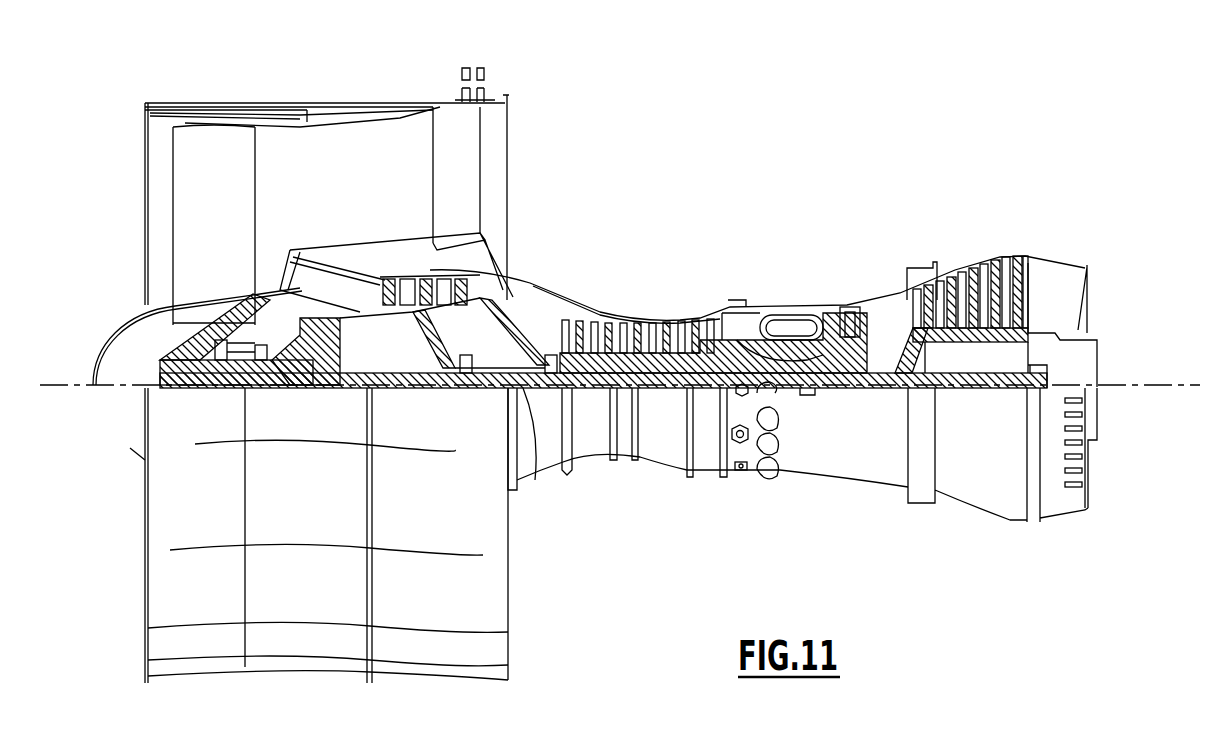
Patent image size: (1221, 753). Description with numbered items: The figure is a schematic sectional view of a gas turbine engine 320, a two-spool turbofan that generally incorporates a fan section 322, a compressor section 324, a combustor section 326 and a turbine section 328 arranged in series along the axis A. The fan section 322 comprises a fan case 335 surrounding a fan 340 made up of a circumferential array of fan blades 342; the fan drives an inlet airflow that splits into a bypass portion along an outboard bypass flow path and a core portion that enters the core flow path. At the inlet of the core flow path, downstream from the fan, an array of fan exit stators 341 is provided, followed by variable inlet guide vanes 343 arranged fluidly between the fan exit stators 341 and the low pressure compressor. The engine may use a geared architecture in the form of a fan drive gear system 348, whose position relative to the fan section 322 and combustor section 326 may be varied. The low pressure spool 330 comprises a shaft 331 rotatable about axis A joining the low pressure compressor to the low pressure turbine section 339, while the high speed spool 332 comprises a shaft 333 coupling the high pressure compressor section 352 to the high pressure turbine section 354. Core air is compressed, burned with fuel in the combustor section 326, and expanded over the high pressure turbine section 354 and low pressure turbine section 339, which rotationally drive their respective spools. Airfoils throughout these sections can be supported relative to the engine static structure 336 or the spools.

The gas turbine engine 320 is at (783, 153).
The fan section 322 is at (242, 90).
The fan case 335 is at (267, 110).
The fan 340 is at (158, 276).
The fan blades 342 is at (237, 233).
The fan drive gear system 348 is at (335, 367).
The fan exit stator 341 is at (293, 255).
The variable inlet guide vanes 343 is at (372, 287).
The compressor section 324 is at (560, 292).
The high pressure compressor section 352 is at (643, 308).
The high speed spool 332 is at (704, 344).
The combustor section 326 is at (784, 280).
The high pressure turbine section 354 is at (848, 297).
The turbine section 328 is at (930, 240).
The low pressure turbine section 339 is at (973, 285).
The axis A is at (1167, 385).
The shaft 331 is at (525, 388).
The low pressure spool 330 is at (665, 400).
The engine static structure 336 is at (705, 490).
The shaft 333 is at (808, 400).